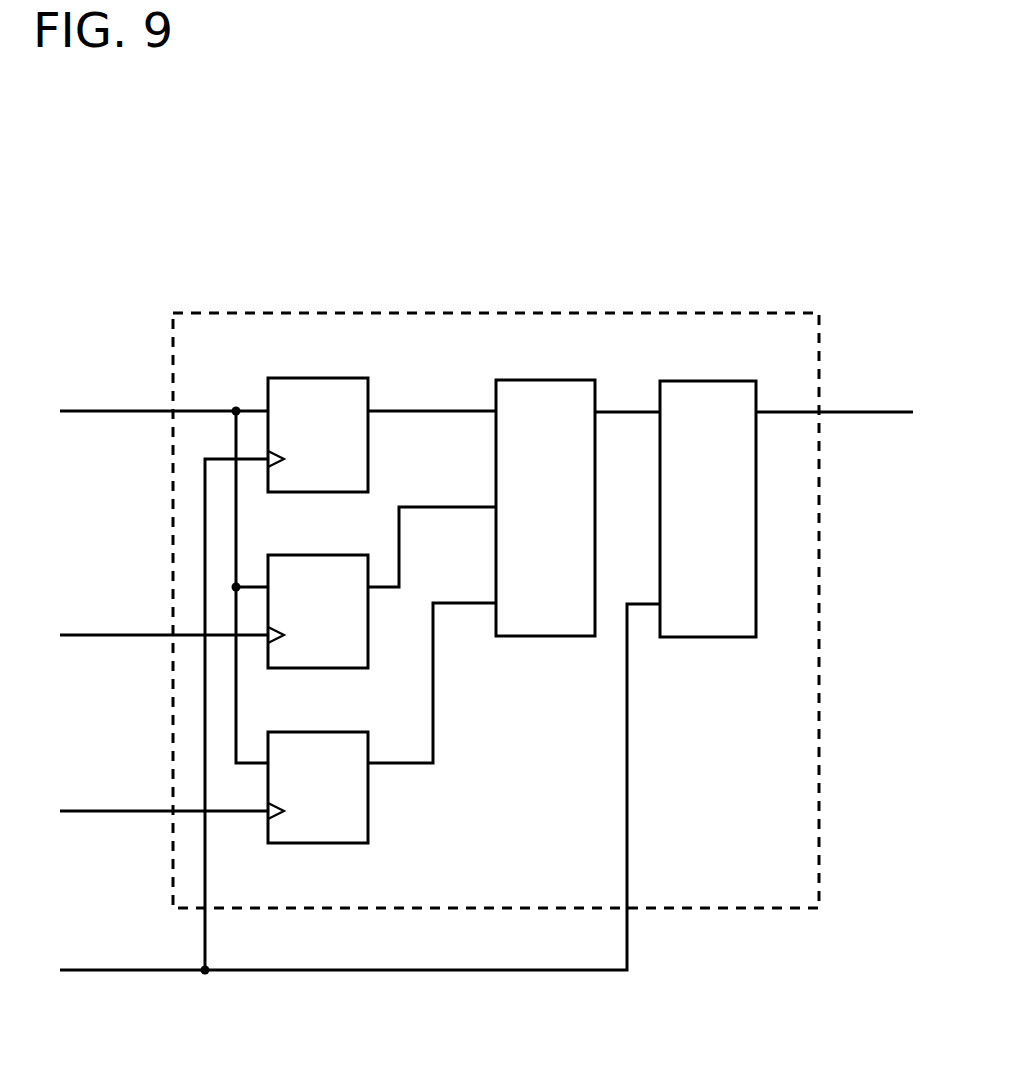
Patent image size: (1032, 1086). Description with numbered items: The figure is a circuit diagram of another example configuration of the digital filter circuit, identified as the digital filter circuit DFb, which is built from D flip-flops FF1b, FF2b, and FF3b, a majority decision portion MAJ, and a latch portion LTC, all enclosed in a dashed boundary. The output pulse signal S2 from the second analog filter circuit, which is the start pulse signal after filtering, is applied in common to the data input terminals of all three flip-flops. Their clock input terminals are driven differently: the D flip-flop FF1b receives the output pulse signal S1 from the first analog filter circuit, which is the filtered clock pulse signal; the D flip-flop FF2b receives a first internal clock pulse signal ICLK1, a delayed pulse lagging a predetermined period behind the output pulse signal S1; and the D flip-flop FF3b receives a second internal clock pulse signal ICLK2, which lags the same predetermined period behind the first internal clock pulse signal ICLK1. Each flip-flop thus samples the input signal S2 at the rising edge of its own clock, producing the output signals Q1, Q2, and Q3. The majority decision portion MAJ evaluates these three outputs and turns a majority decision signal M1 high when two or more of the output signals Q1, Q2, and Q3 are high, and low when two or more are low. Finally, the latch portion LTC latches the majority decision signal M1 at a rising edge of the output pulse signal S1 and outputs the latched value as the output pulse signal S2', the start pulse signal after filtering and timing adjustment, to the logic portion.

The digital filter circuit DFb is at (496, 313).
The D flip-flop FF1b is at (316, 378).
The D flip-flop FF2b is at (316, 554).
The D flip-flop FF3b is at (316, 729).
The majority decision portion MAJ is at (546, 379).
The latch portion LTC is at (706, 379).
The output pulse signal S2 is at (164, 571).
The output pulse signal S2' is at (834, 394).
The output pulse signal S1 is at (360, 717).
The first internal clock pulse signal ICLK1 is at (164, 618).
The second internal clock pulse signal ICLK2 is at (164, 794).
The output signal Q1 is at (432, 397).
The output signal Q2 is at (432, 530).
The output signal Q3 is at (432, 667).
The majority decision signal M1 is at (627, 395).